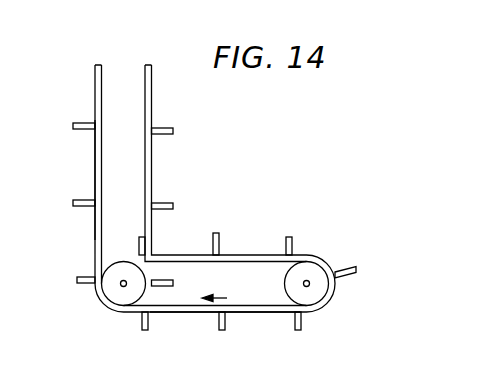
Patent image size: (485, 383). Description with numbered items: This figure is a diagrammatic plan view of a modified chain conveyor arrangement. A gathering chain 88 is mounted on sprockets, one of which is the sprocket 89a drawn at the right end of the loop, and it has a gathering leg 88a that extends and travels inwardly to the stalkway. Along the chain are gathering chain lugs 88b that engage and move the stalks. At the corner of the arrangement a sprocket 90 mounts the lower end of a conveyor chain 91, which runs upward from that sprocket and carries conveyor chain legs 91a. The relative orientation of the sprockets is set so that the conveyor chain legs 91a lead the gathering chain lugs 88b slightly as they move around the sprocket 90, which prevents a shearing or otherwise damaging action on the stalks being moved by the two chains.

The gathering chain 88 is at (270, 253).
The gathering leg 88a is at (192, 313).
The gathering chain lugs 88b is at (92, 285).
The sprocket 89a is at (317, 288).
The sprocket 90 is at (120, 293).
The conveyor chain 91 is at (150, 123).
The conveyor chain legs 91a is at (82, 277).